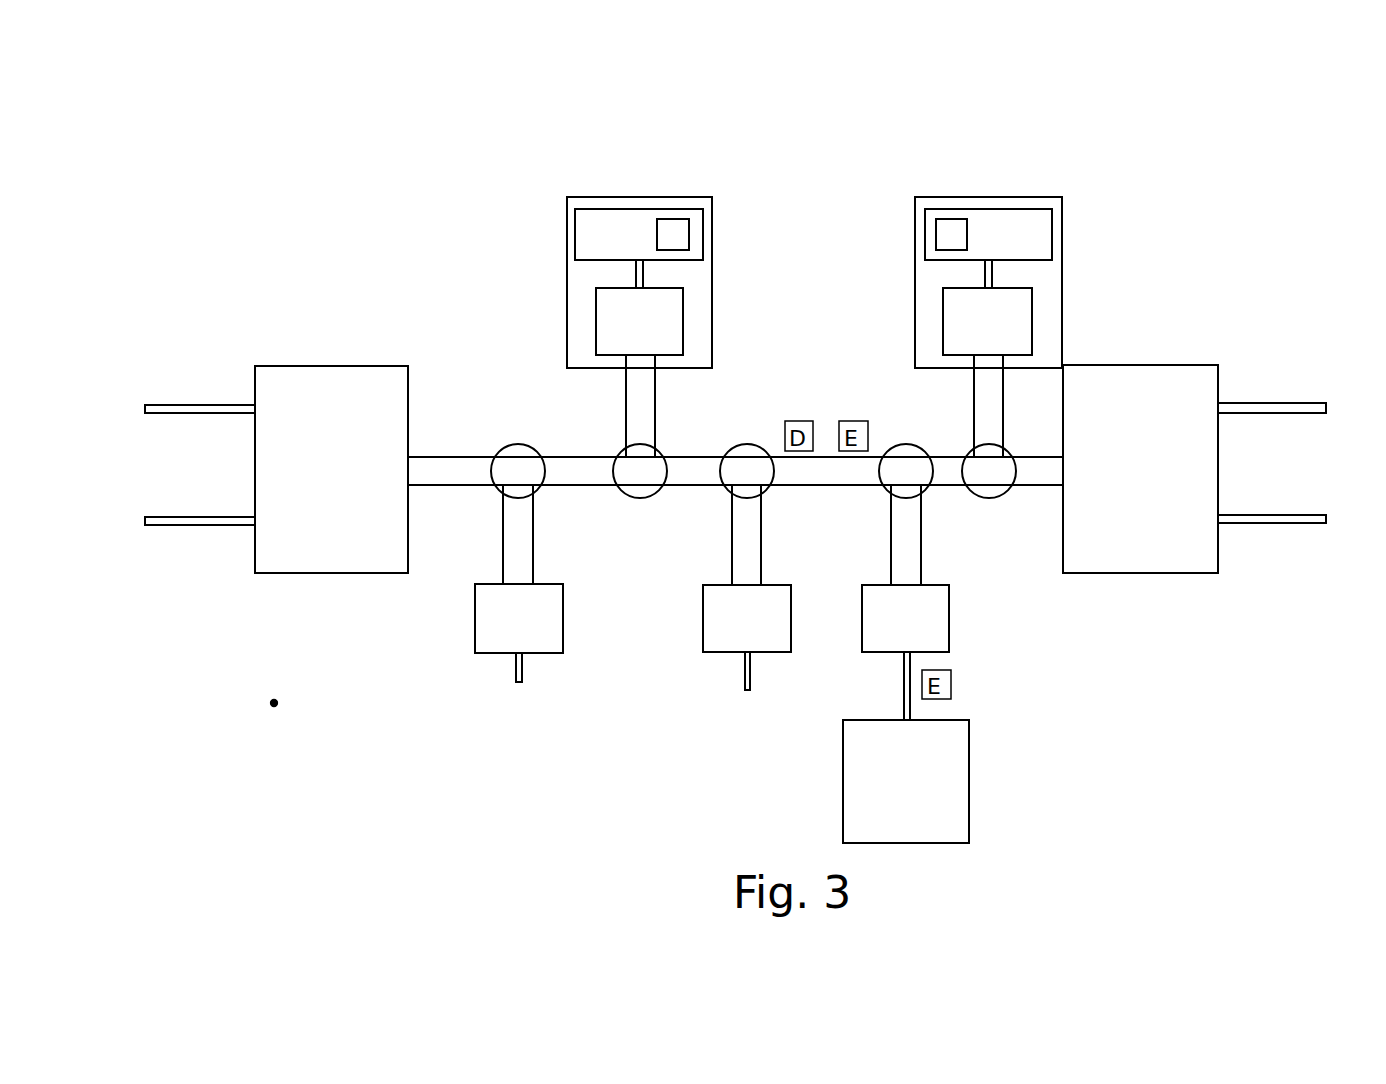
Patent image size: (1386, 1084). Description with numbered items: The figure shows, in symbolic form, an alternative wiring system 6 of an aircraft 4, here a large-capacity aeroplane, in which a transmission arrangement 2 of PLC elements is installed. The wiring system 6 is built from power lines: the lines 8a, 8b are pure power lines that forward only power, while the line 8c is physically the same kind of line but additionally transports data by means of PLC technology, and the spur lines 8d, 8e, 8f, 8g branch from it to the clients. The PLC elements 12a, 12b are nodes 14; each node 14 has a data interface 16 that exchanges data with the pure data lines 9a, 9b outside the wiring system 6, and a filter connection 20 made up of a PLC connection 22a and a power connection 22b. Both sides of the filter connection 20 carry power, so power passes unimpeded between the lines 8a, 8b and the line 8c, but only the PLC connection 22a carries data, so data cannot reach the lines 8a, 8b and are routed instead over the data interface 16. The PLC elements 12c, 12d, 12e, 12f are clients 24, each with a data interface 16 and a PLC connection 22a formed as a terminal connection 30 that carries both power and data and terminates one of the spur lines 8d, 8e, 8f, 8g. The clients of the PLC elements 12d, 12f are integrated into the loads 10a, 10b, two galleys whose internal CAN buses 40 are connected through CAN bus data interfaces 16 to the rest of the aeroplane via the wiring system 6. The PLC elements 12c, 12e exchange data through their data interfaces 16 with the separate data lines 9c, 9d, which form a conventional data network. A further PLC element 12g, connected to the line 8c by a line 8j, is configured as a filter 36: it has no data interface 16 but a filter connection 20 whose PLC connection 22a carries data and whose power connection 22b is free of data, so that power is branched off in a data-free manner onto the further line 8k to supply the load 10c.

The transmission arrangement 2 is at (377, 767).
The aircraft 4 is at (274, 703).
The wiring system 6 is at (1200, 175).
The line 8a is at (200, 527).
The line 8b is at (1310, 525).
The line 8c is at (445, 457).
The spur line 8d is at (535, 530).
The spur line 8e is at (655, 385).
The spur line 8f is at (761, 530).
The spur line 8g is at (974, 393).
The shaft 8j is at (890, 550).
The further line 8k is at (903, 690).
The data line 9a is at (185, 405).
The data line 9b is at (1272, 403).
The data line 9c is at (515, 670).
The data line 9d is at (742, 670).
The load 10a is at (712, 245).
The load 10b is at (1062, 245).
The load 10c is at (969, 780).
The PLC element 12a is at (331, 425).
The PLC element 12b is at (1213, 365).
The PLC element 12c is at (475, 615).
The PLC element 12d is at (683, 320).
The PLC element 12e is at (791, 627).
The PLC element 12f is at (1032, 320).
The PLC element 12g is at (982, 620).
The node 14 is at (327, 365).
The data interface 16 is at (636, 287).
The filter connection 20 is at (910, 660).
The PLC connection 22a is at (410, 488).
The power connection 22b is at (253, 508).
The client 24 is at (703, 637).
The terminal connection 30 is at (725, 582).
The filter 36 is at (949, 630).
The CAN bus 40 is at (623, 209).